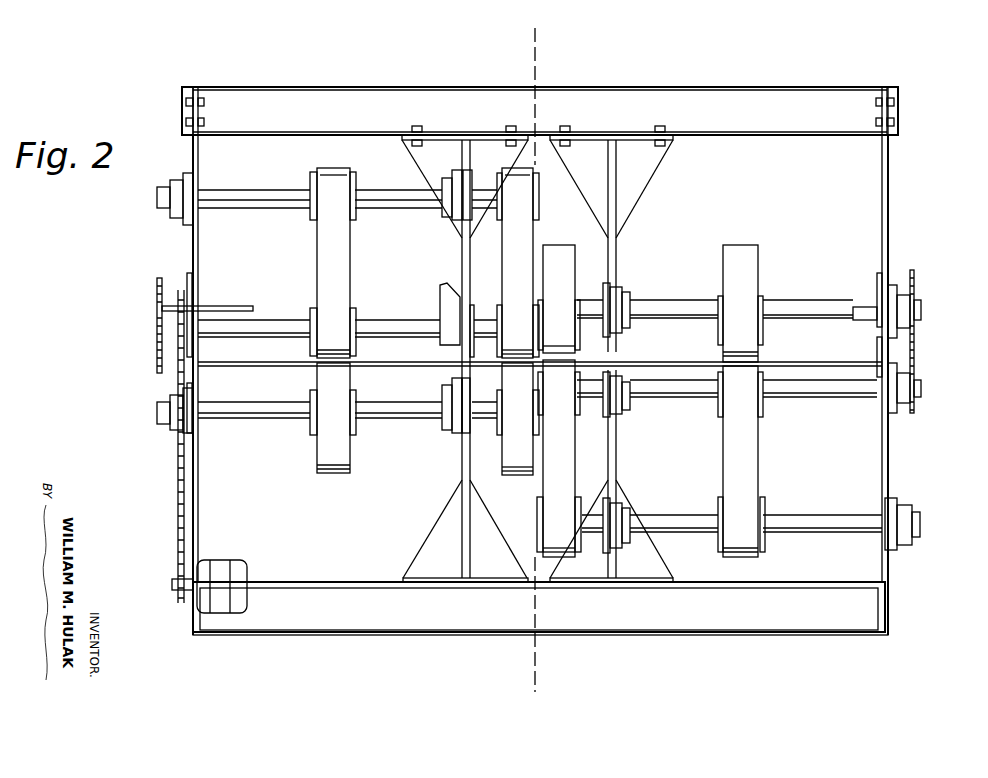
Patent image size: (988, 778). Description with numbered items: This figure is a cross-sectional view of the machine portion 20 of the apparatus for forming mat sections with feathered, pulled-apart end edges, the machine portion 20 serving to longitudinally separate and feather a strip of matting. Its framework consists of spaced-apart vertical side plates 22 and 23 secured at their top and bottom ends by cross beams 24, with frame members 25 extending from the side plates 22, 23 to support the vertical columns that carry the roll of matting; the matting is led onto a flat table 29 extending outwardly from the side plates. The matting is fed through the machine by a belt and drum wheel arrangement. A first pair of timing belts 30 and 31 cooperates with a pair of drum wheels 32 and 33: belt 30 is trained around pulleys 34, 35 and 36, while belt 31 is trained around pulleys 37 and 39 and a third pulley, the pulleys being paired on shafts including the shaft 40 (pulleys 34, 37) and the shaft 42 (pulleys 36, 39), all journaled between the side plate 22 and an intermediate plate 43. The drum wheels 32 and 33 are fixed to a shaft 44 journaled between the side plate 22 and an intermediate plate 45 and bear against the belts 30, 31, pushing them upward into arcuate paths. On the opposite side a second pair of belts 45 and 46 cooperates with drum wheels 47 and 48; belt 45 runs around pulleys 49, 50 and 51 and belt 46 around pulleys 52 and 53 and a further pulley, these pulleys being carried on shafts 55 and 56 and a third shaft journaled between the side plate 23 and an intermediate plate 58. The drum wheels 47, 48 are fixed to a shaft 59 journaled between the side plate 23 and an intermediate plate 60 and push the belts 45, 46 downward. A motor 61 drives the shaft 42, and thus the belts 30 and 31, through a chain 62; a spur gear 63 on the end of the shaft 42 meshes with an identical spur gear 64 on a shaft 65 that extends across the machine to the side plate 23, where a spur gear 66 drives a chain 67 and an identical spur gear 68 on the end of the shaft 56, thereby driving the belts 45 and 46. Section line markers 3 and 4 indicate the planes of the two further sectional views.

The section line 3- 3 is at (535, 28).
The section line 4- 4 is at (535, 28).
The machine portion 20 is at (907, 214).
The side plate 22 is at (192, 251).
The side plate 23 is at (888, 186).
The cross beams 24 is at (340, 88).
The frame members 25 is at (183, 112).
The flat table 29 is at (250, 367).
The timing belt 30 is at (317, 271).
The timing belt 31 is at (501, 263).
The drum wheel 32 is at (316, 456).
The drum wheel 33 is at (501, 444).
The pulley 34 is at (315, 181).
The pulley 35 is at (360, 308).
The pulley 36 is at (310, 310).
The pulley 37 is at (539, 185).
The pulley 39 is at (497, 310).
The shaft 40 is at (222, 192).
The shaft 42 is at (265, 320).
The intermediate plate 43 is at (460, 259).
The shaft 44 is at (265, 413).
The belt 45 is at (460, 468).
The belt 46 is at (566, 476).
The drum wheel 47 is at (760, 286).
The drum wheel 48 is at (578, 273).
The pulley 49 is at (765, 504).
The pulley 50 is at (763, 411).
The pulley 51 is at (719, 410).
The pulley 52 is at (540, 506).
The pulley 53 is at (576, 408).
The shaft 55 is at (835, 514).
The shaft 56 is at (828, 398).
The intermediate plate 58 is at (617, 468).
The shaft 59 is at (810, 300).
The intermediate plate 60 is at (617, 272).
The motor 61 is at (236, 568).
The chain 62 is at (178, 517).
The spur gear 63 is at (157, 363).
The spur gear 64 is at (157, 295).
The shaft 65 is at (216, 305).
The spur gear 66 is at (914, 279).
The chain 67 is at (917, 349).
The spur gear 68 is at (914, 411).